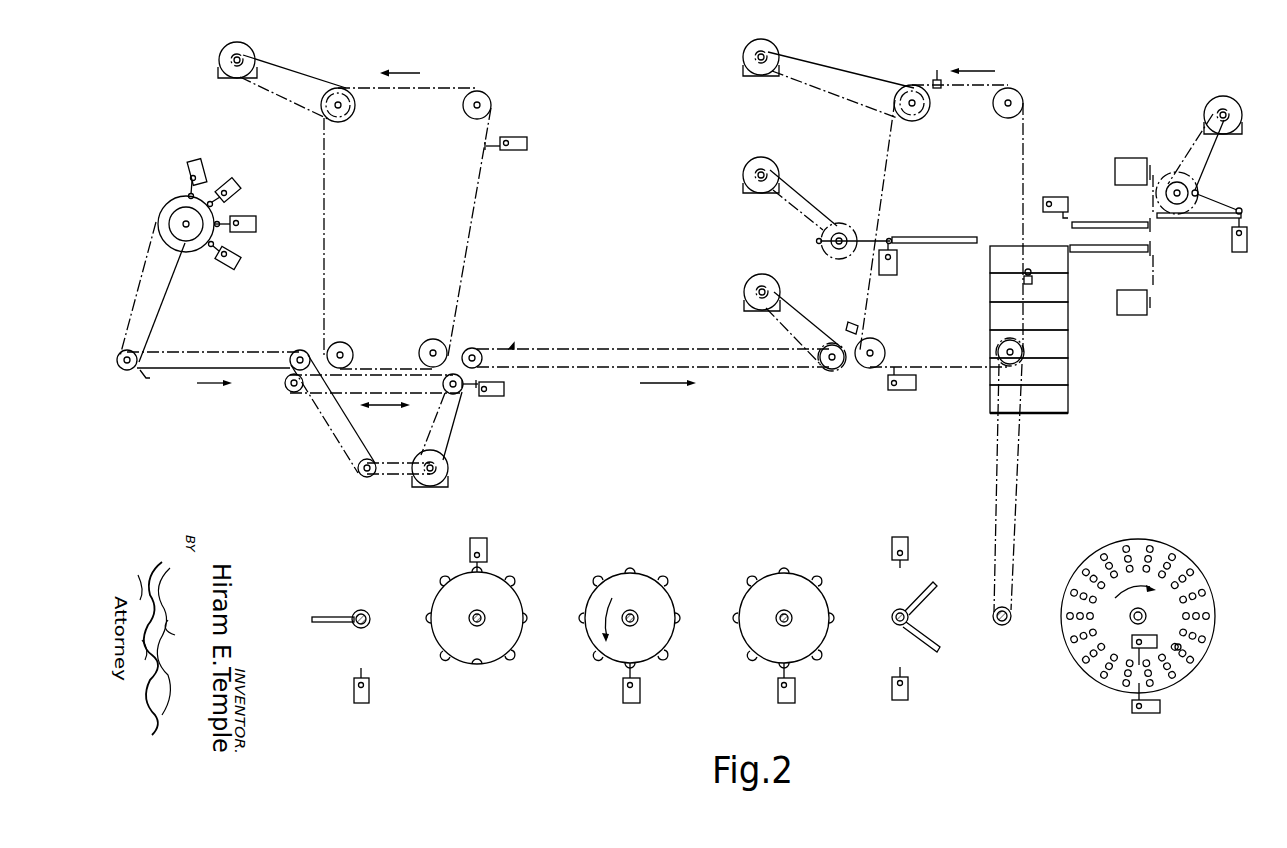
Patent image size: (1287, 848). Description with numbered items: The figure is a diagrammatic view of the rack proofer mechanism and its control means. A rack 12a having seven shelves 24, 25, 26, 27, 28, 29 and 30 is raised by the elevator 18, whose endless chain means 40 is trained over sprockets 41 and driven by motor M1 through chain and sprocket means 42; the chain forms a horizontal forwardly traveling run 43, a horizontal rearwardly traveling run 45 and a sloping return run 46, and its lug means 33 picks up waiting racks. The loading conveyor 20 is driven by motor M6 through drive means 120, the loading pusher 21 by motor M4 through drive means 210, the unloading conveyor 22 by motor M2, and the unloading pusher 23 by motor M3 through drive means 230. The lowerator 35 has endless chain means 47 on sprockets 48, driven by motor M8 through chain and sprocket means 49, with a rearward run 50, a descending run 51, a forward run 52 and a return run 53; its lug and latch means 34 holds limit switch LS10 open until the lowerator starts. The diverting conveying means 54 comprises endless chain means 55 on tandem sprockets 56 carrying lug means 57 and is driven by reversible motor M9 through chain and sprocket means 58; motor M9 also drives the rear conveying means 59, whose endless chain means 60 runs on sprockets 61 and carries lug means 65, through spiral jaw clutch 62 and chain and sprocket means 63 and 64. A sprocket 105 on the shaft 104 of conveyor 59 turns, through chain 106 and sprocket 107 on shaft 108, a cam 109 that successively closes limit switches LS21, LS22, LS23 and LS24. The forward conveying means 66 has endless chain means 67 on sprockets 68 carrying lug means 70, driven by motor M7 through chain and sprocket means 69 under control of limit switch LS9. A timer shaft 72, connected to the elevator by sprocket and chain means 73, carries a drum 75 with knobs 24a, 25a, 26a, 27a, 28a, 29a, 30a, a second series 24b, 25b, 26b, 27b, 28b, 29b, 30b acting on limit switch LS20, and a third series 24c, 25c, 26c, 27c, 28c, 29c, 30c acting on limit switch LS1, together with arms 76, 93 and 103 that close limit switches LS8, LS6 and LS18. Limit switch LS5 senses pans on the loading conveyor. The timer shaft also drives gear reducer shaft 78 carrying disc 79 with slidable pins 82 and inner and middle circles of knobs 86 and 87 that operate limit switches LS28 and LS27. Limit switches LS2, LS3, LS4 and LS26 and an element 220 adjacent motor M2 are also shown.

The lowerator motor M8 is at (254, 50).
The chain and sprocket means 49 is at (305, 68).
The horizontal rearwardly traveling run 50 is at (440, 88).
The sprockets 48 is at (464, 110).
The ascending slightly forwardly sloping return run 53 is at (470, 238).
The endless chain means 47 is at (325, 175).
The lowerator 35 is at (324, 234).
The vertical descending run 51 is at (326, 300).
The horizontal forwardly traveling run 52 is at (353, 360).
The limit switch LS10 is at (527, 143).
The lug and latch means 34 is at (489, 150).
The cam 109 is at (168, 205).
The sprocket 107 is at (182, 206).
The shaft 108 is at (186, 222).
The limit switch LS21 is at (195, 158).
The limit switch LS22 is at (232, 178).
The limit switch LS23 is at (250, 216).
The limit switch LS24 is at (240, 250).
The chain 106 is at (190, 272).
The sprockets 61 is at (128, 372).
The rear conveying means 59 is at (230, 348).
The sprocket 105 is at (140, 350).
The shaft 104 is at (150, 363).
The endless chain means 60 is at (160, 368).
The lug means 65 is at (285, 388).
The diverting conveying means 54 is at (423, 393).
The chain and sprocket means 64 is at (330, 430).
The spiral jaw clutch 62 is at (365, 478).
The chain and sprocket means 63 is at (390, 478).
The reversible motor M9 is at (448, 472).
The sprockets 56 is at (445, 392).
The chain and sprocket means 58 is at (448, 430).
The lug means 57 is at (470, 380).
The limit switch LS26 is at (504, 393).
The endless chain means 55 is at (495, 328).
The lug means 70 is at (520, 348).
The sprockets 68 is at (538, 328).
The forward conveying means 66 is at (614, 352).
The endless chain means 67 is at (840, 385).
The elevator motor M1 is at (743, 57).
The chain and sprocket means 42 is at (850, 70).
The unloading pusher motor M3 is at (743, 175).
The drive means 230 is at (798, 222).
The unloading pusher 23 is at (915, 237).
The limit switch LS3 is at (897, 268).
The descending slightly rearwardly sloping return run 46 is at (875, 195).
The forward conveyor motor M7 is at (744, 292).
The chain and sprocket means 69 is at (786, 300).
The lug means 33 is at (937, 70).
The sprockets 41 is at (878, 340).
The horizontal rearwardly traveling run 45 is at (995, 85).
The elevator 18 is at (1022, 148).
The endless chain means 40 is at (1022, 203).
The horizontal forwardly traveling run 43 is at (940, 370).
The limit switch LS9 is at (912, 390).
The rack 12a is at (990, 413).
The shelf 24 is at (1040, 252).
The shelf 25 is at (1042, 278).
The shelf 26 is at (1042, 308).
The shelf 27 is at (1042, 335).
The shelf 28 is at (1042, 362).
The shelf 29 is at (1042, 390).
The shelf 30 is at (1050, 415).
The sprocket and chain means 73 is at (1015, 525).
The limit switch LS5 is at (1045, 197).
The loading conveyor 20 is at (1090, 222).
The unloading conveyor 22 is at (1108, 252).
The loading conveyor motor M6 is at (1120, 158).
The drive means 120 is at (1153, 175).
The unloading conveyor motor M2 is at (1135, 315).
The drive link 220 is at (1153, 280).
The loading pusher motor M4 is at (1215, 96).
The drive means 210 is at (1205, 165).
The loading pusher 21 is at (1180, 218).
The limit switch LS4 is at (1245, 252).
The arm 103 is at (320, 617).
The timer shaft 72 is at (366, 610).
The limit switch LS18 is at (390, 715).
The drum 75 is at (492, 575).
The knob 24b is at (512, 582).
The knob 25b is at (528, 620).
The knob 26b is at (513, 657).
The knob 27b is at (478, 668).
The knob 28b is at (443, 655).
The knob 29b is at (430, 622).
The knob 30b is at (445, 580).
The limit switch LS20 is at (470, 540).
The knob 24c is at (622, 664).
The knob 25c is at (597, 658).
The knob 26c is at (583, 618).
The knob 27c is at (620, 573).
The knob 28c is at (655, 575).
The knob 29c is at (675, 605).
The knob 30c is at (680, 618).
The limit switch LS1 is at (650, 718).
The knob 24a is at (752, 658).
The knob 25a is at (738, 625).
The knob 26a is at (752, 578).
The knob 27a is at (784, 572).
The knob 28a is at (818, 584).
The knob 29a is at (833, 622).
The knob 30a is at (818, 658).
The limit switch LS2 is at (805, 718).
The arm 76 is at (925, 590).
The arm 93 is at (938, 652).
The limit switch LS8 is at (908, 545).
The limit switch LS6 is at (908, 690).
The disc 79 is at (1195, 568).
The gear reducer shaft 78 is at (1146, 615).
The pins 82 is at (1148, 548).
The limit switch LS28 is at (1132, 645).
The limit switch LS27 is at (1168, 728).
The middle circle of knobs 87 is at (1182, 650).
The inner circle of knobs 86 is at (1178, 650).